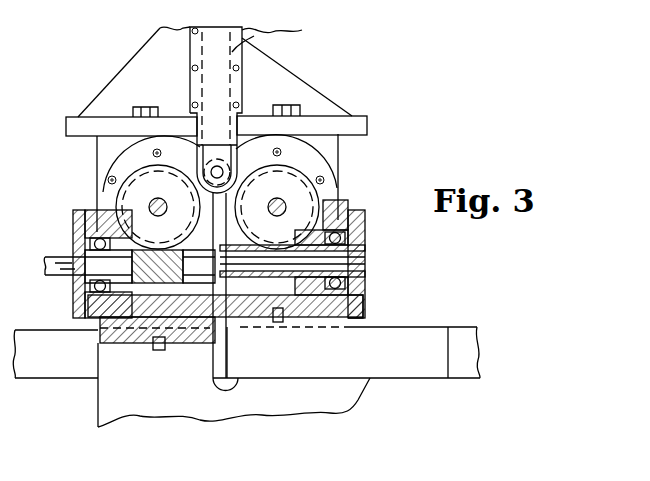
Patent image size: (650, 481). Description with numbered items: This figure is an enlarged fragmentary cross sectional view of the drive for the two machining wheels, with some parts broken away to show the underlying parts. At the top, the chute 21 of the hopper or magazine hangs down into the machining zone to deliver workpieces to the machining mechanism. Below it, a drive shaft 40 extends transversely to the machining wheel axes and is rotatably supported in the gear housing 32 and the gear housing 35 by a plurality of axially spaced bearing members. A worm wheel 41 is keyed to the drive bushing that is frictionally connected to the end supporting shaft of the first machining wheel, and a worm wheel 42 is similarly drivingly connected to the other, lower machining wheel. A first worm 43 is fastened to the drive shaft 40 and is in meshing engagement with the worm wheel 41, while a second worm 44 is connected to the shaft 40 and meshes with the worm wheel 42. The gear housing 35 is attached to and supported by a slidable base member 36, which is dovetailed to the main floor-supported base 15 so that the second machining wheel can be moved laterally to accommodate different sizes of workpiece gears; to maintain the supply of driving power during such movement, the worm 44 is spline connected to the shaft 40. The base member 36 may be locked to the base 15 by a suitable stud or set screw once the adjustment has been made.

The base 15 is at (130, 406).
The chute 21 is at (262, 36).
The gear housing 32 is at (93, 322).
The gear housing 35 is at (360, 317).
The base member 36 is at (420, 335).
The drive shaft 40 is at (61, 289).
The worm wheel 41 is at (134, 179).
The worm wheel 42 is at (303, 181).
The first worm 43 is at (147, 300).
The second worm 44 is at (289, 323).